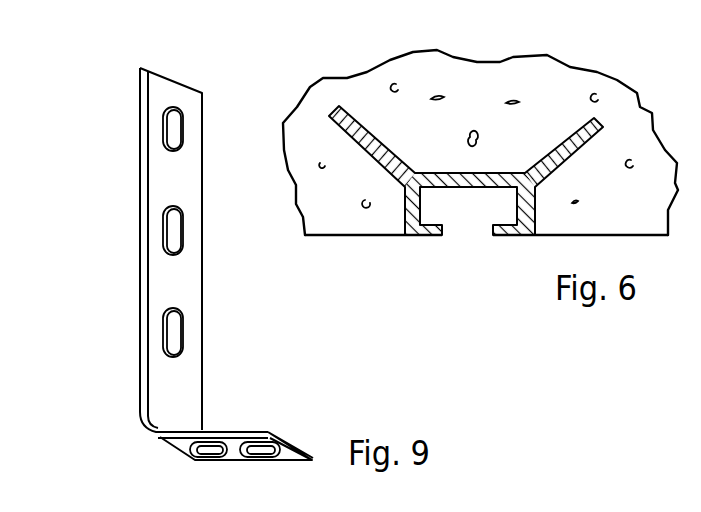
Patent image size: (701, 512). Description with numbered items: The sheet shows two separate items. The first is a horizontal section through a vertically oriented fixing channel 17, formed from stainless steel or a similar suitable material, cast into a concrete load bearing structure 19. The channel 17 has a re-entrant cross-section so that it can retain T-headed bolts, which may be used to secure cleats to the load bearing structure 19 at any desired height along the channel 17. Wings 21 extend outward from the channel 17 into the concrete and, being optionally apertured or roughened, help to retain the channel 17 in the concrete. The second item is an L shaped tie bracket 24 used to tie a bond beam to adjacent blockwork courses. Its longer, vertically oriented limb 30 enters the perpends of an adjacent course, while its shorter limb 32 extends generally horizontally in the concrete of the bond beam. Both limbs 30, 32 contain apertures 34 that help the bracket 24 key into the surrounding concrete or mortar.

In FIG. 6, the channel 17 is at (438, 254).
In FIG. 6, the concrete load bearing structure 19 is at (476, 72).
In FIG. 6, the wings 21 is at (352, 113).
In FIG. 9, the L shaped bracket 24 is at (106, 157).
In FIG. 9, the vertically oriented limb 30 is at (139, 316).
In FIG. 9, the shorter limb 32 is at (235, 430).
In FIG. 9, the apertures 34 is at (172, 122).